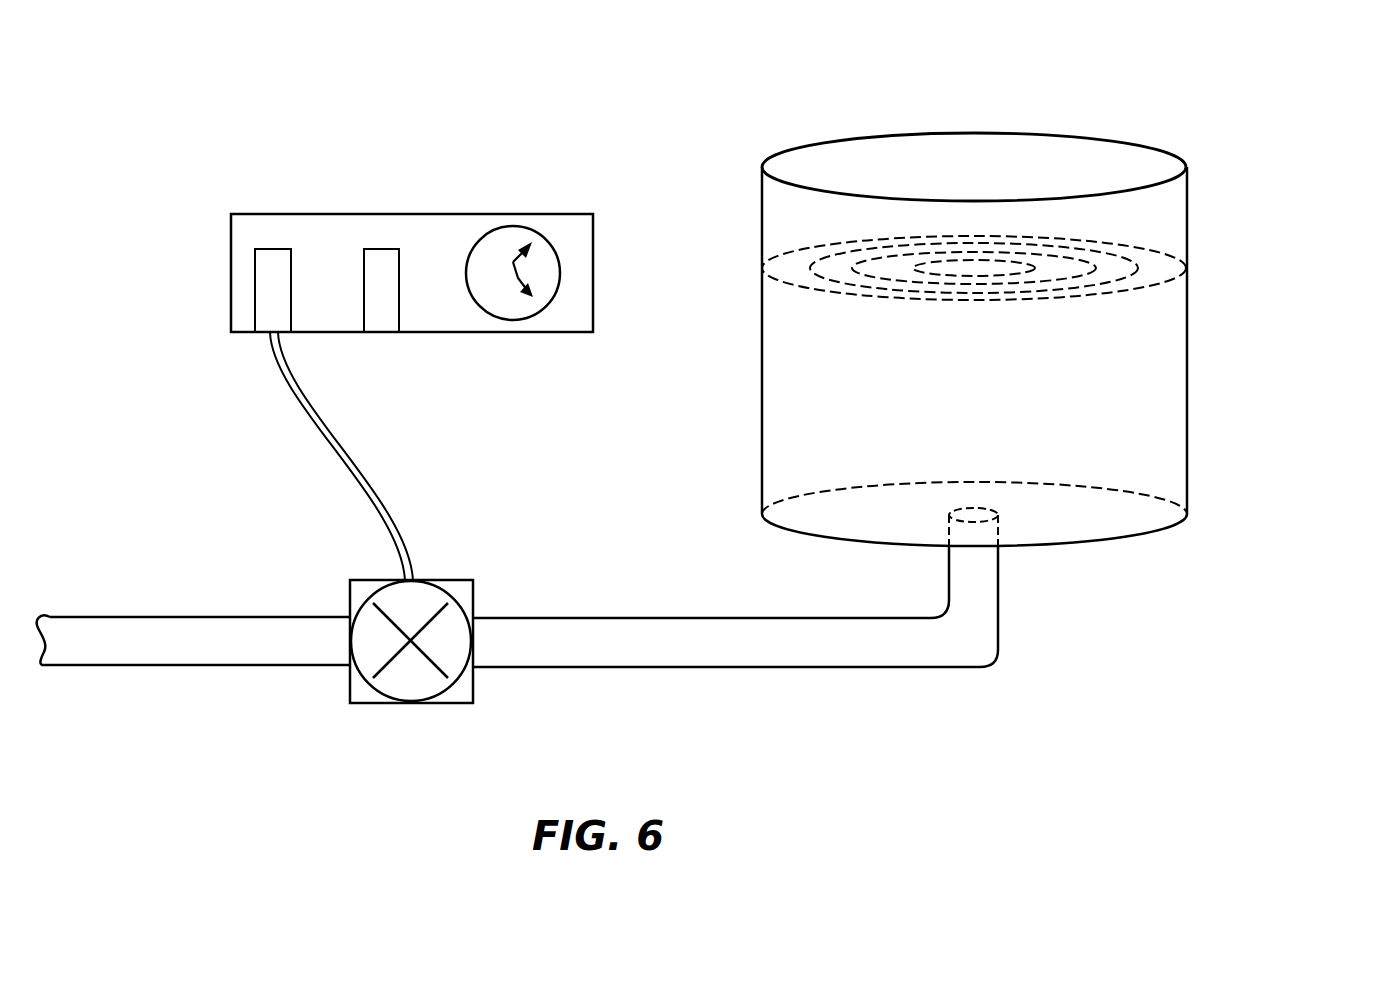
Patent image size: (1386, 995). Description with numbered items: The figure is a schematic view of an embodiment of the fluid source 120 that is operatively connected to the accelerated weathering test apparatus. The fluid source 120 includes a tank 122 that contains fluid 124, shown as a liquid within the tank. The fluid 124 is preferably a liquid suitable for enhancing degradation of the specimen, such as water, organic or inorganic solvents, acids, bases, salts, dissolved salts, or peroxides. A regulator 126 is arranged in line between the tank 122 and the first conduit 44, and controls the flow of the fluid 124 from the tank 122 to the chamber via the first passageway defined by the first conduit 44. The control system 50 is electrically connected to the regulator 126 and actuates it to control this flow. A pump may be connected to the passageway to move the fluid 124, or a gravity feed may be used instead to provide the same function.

The fluid source 120 is at (1250, 88).
The control system 50 is at (448, 214).
The tank 122 is at (1187, 222).
The fluid 124 is at (1155, 425).
The first conduit 44 is at (165, 665).
The regulator 126 is at (459, 695).